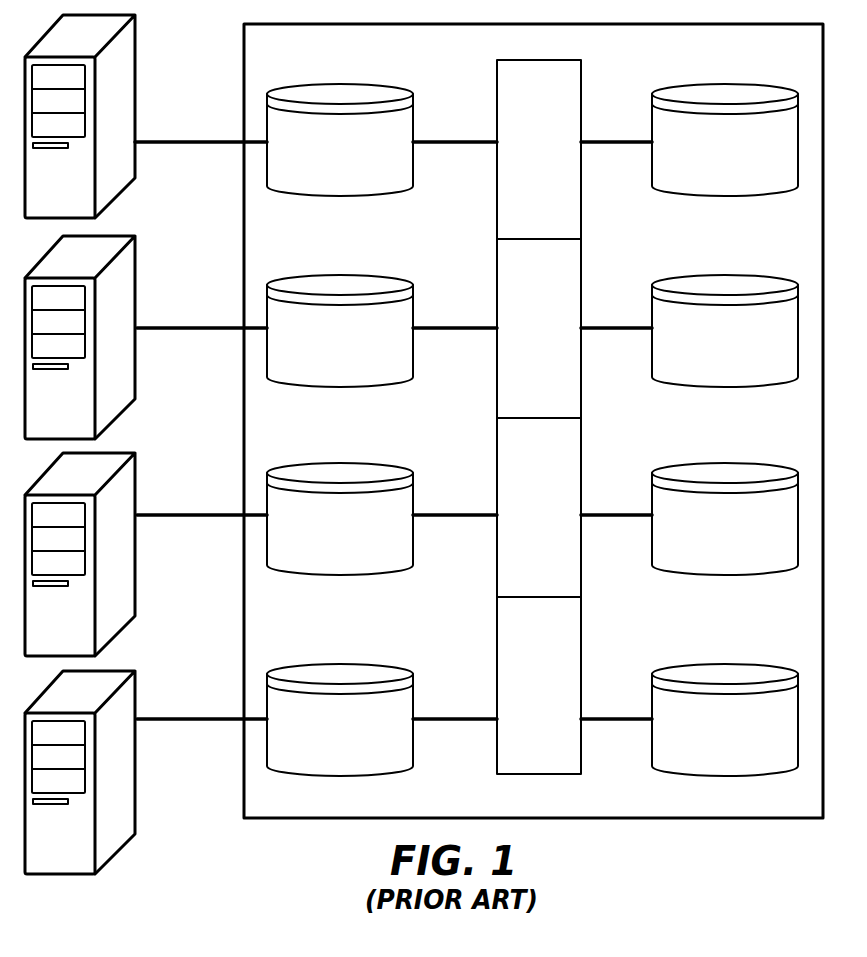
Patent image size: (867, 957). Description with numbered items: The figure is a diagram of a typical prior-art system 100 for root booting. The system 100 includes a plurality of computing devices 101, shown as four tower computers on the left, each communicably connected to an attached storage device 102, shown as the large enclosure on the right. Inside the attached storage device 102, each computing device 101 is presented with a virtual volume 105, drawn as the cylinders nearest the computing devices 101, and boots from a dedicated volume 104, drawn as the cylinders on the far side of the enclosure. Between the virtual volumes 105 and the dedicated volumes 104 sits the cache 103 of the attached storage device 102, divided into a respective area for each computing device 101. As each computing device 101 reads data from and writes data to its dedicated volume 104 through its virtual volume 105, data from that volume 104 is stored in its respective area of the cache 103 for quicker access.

The system 100 is at (723, 862).
The computing device 101 is at (138, 88).
The attached storage device 102 is at (603, 820).
The cache 103 is at (582, 88).
The dedicated volume 104 is at (726, 82).
The virtual volume 105 is at (342, 82).